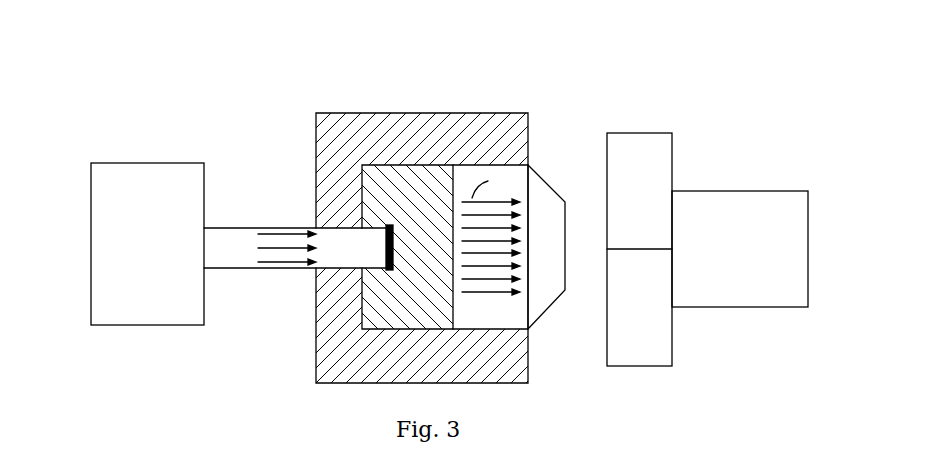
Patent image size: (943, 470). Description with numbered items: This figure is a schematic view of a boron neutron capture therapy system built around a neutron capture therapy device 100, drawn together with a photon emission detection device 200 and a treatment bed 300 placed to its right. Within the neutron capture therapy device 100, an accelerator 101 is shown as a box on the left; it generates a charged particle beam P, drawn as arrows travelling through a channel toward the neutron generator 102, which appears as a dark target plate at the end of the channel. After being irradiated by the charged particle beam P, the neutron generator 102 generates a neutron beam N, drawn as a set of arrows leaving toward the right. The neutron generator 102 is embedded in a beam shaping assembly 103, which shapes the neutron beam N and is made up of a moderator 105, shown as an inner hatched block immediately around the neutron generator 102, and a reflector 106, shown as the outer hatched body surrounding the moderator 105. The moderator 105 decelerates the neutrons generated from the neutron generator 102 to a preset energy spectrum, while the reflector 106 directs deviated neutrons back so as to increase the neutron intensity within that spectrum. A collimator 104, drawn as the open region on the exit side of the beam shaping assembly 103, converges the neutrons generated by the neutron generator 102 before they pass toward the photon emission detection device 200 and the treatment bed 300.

The neutron capture therapy device 100 is at (139, 63).
The accelerator 101 is at (110, 295).
The neutron generator 102 is at (384, 249).
The beam shaping assembly 103 is at (434, 102).
The collimator 104 is at (543, 292).
The moderator 105 is at (378, 320).
The reflector 106 is at (375, 127).
The photon emission detection device 200 is at (635, 172).
The treatment bed 300 is at (705, 228).